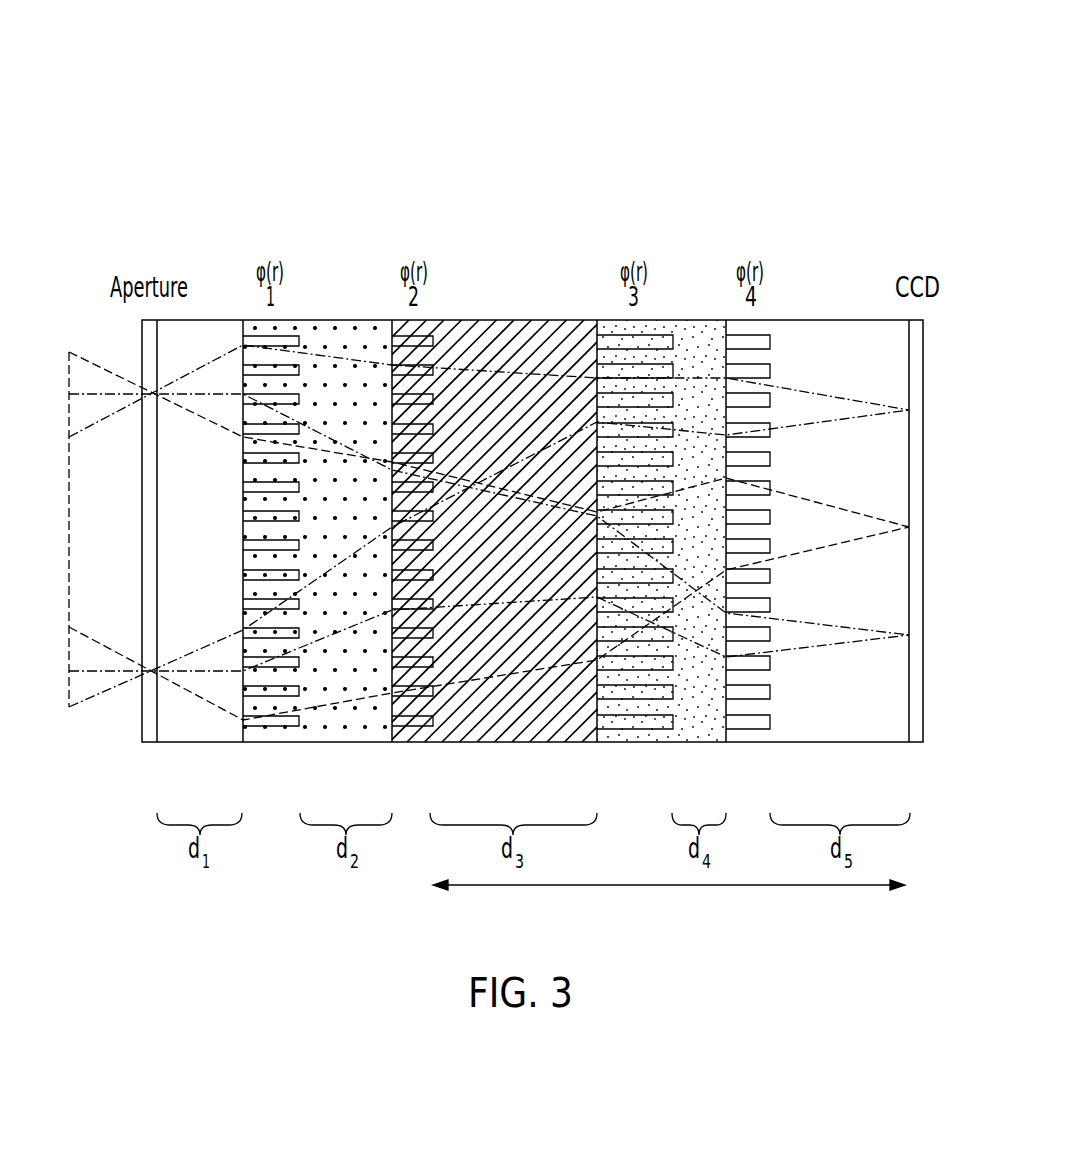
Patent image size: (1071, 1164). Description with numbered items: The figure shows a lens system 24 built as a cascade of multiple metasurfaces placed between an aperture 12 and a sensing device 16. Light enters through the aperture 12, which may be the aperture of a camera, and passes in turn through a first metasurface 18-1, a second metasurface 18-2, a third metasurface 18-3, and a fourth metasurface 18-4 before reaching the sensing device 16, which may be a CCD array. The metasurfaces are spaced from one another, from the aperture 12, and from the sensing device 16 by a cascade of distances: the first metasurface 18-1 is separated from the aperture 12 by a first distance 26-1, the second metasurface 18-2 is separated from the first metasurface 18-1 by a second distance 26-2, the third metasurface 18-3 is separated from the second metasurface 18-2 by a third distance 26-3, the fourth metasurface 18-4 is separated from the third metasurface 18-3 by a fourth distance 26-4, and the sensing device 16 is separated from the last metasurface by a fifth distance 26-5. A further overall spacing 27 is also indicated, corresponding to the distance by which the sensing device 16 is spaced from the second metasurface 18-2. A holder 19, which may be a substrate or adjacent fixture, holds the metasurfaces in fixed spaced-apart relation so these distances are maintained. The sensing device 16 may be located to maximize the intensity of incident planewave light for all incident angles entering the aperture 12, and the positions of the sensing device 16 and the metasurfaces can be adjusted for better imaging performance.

The aperture 12 is at (142, 338).
The sensing device 16 is at (923, 365).
The first metasurface 18-1 is at (300, 330).
The second metasurface 18-2 is at (455, 330).
The third metasurface 18-3 is at (684, 330).
The fourth metasurface 18-4 is at (803, 330).
The metasurface holder 19 is at (910, 213).
The lens system 24 is at (264, 86).
The first distance 26-1 is at (175, 745).
The second distance 26-2 is at (308, 745).
The third distance 26-3 is at (500, 745).
The fourth distance 26-4 is at (668, 745).
The fifth distance 26-5 is at (812, 745).
The third distance 27 is at (653, 888).